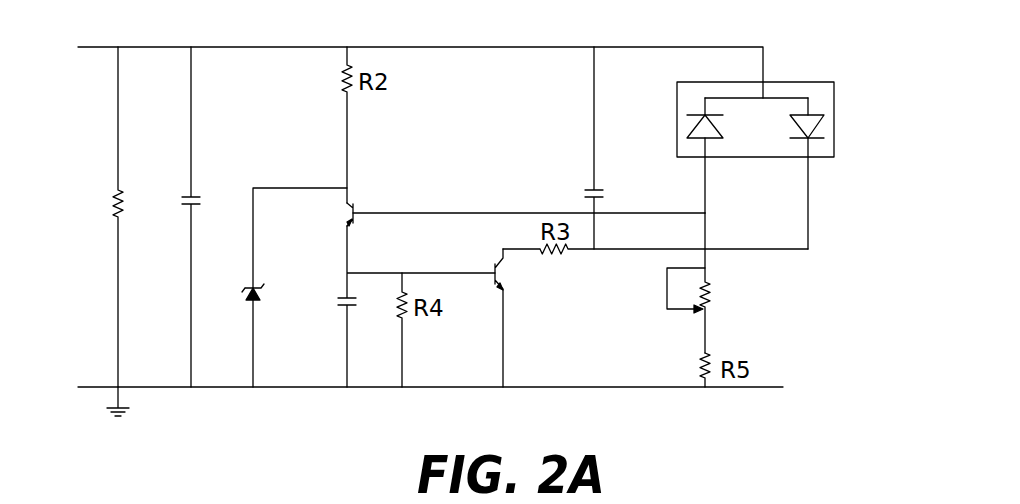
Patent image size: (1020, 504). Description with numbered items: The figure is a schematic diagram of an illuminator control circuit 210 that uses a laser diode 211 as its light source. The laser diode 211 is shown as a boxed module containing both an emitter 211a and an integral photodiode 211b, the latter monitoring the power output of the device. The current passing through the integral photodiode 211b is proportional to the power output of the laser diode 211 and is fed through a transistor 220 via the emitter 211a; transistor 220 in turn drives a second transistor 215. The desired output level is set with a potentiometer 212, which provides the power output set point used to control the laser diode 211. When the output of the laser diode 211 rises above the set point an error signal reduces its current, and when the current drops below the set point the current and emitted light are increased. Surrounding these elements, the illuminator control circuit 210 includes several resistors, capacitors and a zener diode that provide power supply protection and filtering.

The illuminator control circuit 210 is at (105, 233).
The transistor 220 is at (346, 214).
The transistor 215 is at (503, 245).
The laser diode 211 is at (752, 135).
The emitter 211a is at (664, 155).
The integral photodiode 211b is at (844, 173).
The potentiometer 212 is at (709, 309).